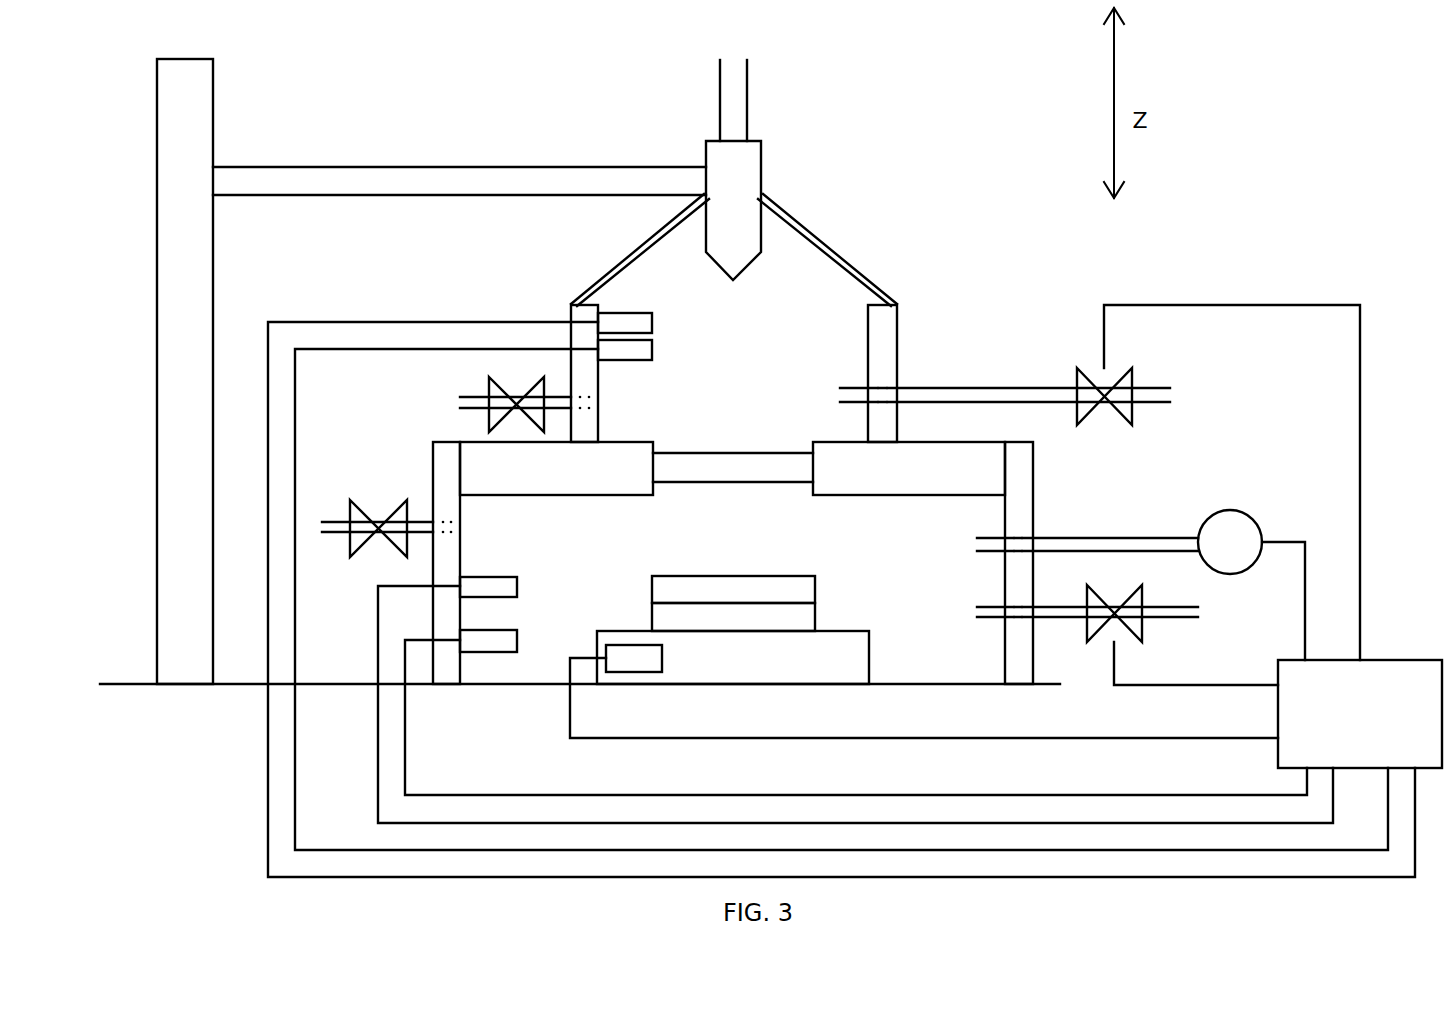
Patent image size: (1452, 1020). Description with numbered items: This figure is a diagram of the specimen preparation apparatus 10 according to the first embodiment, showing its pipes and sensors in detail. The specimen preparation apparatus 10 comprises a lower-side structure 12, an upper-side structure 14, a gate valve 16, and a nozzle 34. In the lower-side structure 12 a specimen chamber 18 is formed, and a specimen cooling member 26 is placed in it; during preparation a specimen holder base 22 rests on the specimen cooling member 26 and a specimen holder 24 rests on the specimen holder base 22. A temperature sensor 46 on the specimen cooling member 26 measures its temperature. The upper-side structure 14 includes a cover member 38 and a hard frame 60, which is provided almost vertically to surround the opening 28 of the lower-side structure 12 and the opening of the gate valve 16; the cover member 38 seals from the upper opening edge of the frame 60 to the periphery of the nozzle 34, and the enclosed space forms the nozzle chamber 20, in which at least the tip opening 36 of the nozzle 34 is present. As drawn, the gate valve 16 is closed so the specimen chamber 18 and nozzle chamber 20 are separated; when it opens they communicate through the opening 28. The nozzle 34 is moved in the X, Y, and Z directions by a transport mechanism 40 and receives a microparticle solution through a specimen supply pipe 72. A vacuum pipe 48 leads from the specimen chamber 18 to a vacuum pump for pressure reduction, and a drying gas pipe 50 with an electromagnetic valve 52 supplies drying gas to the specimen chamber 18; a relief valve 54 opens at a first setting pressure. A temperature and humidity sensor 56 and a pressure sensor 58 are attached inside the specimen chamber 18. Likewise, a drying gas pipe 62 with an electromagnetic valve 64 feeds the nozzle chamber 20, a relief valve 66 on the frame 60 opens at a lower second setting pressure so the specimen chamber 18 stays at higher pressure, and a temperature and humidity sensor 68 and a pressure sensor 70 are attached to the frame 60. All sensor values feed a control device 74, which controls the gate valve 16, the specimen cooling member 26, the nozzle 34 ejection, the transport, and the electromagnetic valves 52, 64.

The specimen preparation apparatus 10 is at (525, 29).
The lower-side structure 12 is at (1033, 523).
The upper-side structure 14 is at (752, 183).
The gate valve 16 is at (732, 471).
The specimen chamber 18 is at (591, 533).
The nozzle chamber 20 is at (773, 301).
The specimen holder base 22 is at (815, 617).
The specimen holder 24 is at (815, 590).
The specimen cooling member 26 is at (869, 660).
The opening 28 is at (655, 493).
The nozzle 34 is at (761, 180).
The tip opening 36 is at (717, 262).
The cover member 38 is at (830, 238).
The transport mechanism 40 is at (213, 110).
The temperature sensor 46 is at (634, 672).
The vacuum pipe 48 is at (1120, 538).
The drying gas pipe 50 is at (1050, 618).
The electromagnetic valve 52 is at (1142, 588).
The relief valve 54 is at (370, 500).
The temperature and humidity sensor 56 is at (490, 577).
The pressure sensor 58 is at (490, 630).
The frame 60 is at (897, 328).
The drying gas pipe 62 is at (980, 388).
The electromagnetic valve 64 is at (1104, 375).
The relief valve 66 is at (489, 394).
The temperature and humidity sensor 68 is at (652, 322).
The pressure sensor 70 is at (652, 352).
The specimen supply pipe 72 is at (747, 105).
The control device 74 is at (1393, 660).